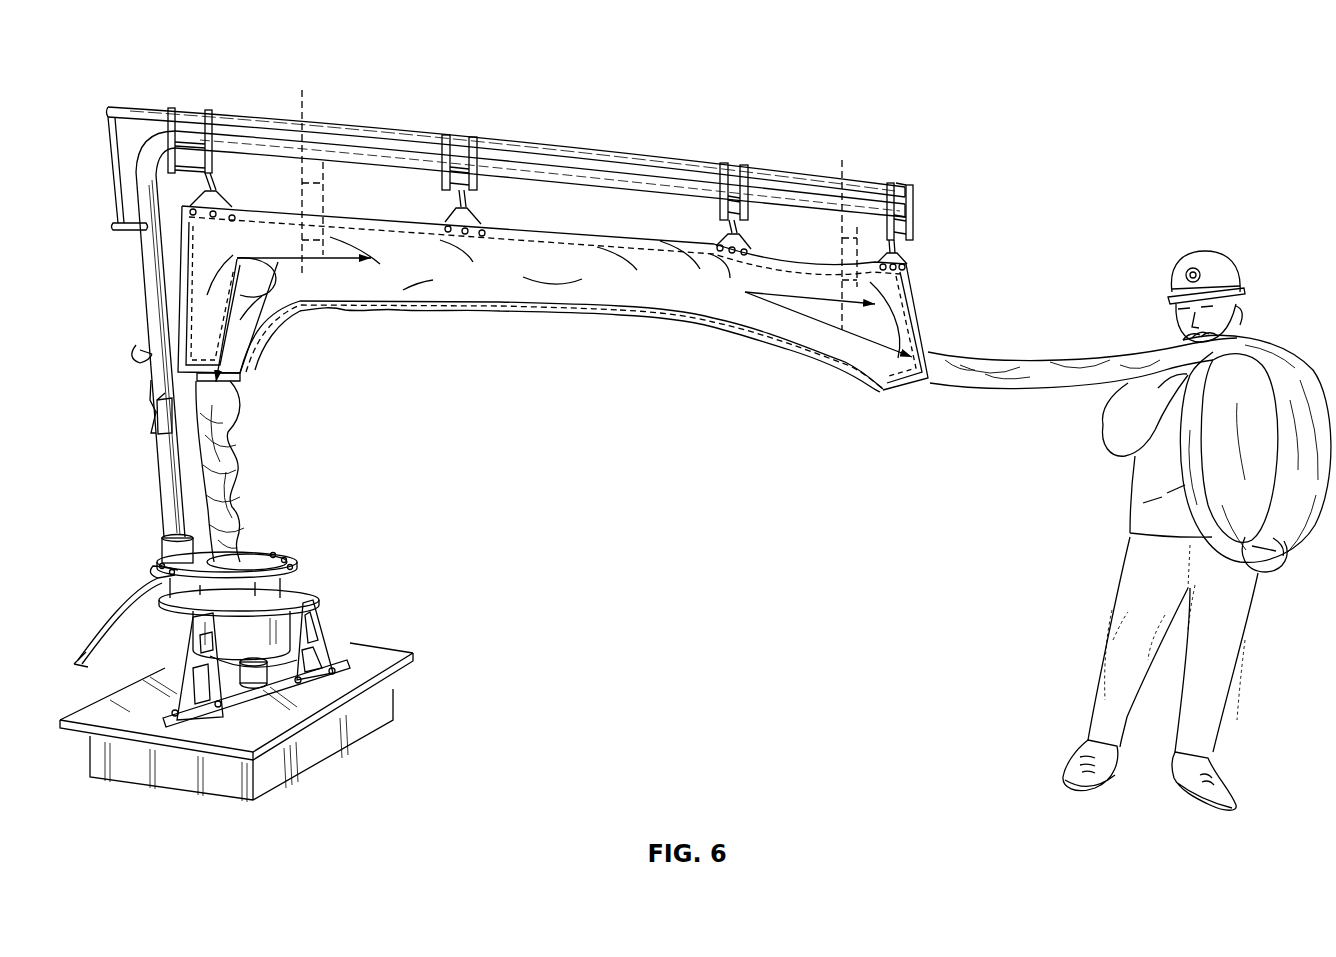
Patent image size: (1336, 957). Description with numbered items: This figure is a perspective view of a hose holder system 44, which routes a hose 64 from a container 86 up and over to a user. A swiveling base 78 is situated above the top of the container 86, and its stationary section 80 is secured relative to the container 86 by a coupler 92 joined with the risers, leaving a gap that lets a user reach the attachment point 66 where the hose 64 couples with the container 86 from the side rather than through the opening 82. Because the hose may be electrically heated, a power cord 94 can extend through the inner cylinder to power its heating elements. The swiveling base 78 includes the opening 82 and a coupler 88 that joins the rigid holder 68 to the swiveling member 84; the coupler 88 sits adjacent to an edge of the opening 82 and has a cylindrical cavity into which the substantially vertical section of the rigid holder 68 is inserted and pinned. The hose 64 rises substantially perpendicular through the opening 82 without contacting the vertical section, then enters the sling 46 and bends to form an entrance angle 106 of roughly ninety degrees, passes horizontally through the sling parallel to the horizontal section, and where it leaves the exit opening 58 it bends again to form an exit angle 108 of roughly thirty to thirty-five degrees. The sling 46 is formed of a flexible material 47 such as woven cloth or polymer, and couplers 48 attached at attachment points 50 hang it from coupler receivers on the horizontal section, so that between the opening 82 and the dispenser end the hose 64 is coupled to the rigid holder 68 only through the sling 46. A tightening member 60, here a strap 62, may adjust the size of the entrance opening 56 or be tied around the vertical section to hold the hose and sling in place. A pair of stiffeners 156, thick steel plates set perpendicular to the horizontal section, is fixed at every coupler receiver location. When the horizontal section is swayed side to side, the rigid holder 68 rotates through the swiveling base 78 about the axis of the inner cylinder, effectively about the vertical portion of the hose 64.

The hose holder system 44 is at (1060, 115).
The sling 46 is at (667, 294).
The flexible material 47 is at (528, 292).
The couplers 48 is at (471, 197).
The attachment points 50 is at (447, 225).
The entrance opening 56 is at (227, 398).
The exit opening 58 is at (927, 338).
The tightening member 60 is at (150, 357).
The strap 62 is at (147, 353).
The hose 64 is at (1053, 394).
The attachment point 66 is at (267, 672).
The rigid holder 68 is at (389, 147).
The swiveling base 78 is at (298, 561).
The stationary section 80 is at (227, 625).
The opening 82 is at (287, 558).
The swiveling member 84 is at (302, 591).
The container 86 is at (397, 700).
The coupler 88 is at (168, 548).
The coupler 92 is at (267, 680).
The power cord 94 is at (137, 603).
The entrance angle 106 is at (253, 280).
The exit angle 108 is at (777, 301).
The stiffeners 156 is at (752, 178).